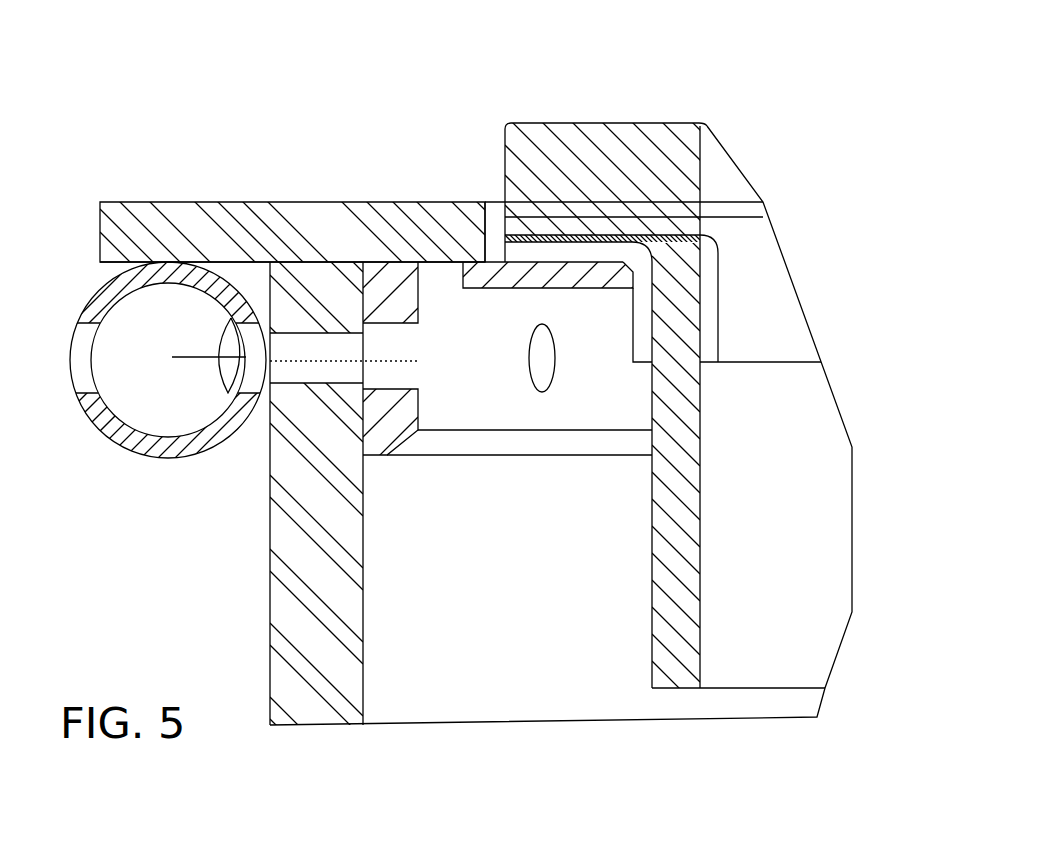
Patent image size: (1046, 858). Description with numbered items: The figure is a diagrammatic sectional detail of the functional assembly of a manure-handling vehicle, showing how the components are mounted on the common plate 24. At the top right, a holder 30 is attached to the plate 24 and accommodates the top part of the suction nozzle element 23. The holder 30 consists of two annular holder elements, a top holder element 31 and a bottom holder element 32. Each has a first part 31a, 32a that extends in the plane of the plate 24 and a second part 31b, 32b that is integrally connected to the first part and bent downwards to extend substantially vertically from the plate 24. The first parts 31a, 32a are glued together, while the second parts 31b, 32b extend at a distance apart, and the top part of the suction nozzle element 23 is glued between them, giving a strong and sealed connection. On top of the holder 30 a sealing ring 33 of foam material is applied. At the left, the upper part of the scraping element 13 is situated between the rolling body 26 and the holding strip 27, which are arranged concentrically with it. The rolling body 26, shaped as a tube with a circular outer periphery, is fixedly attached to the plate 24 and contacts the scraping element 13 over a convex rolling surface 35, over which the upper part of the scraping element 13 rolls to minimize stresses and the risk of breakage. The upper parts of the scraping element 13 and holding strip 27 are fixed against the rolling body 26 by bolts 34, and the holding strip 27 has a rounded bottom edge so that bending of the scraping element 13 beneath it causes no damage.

The scraping element 13 is at (297, 608).
The suction nozzle element 23 is at (669, 643).
The common plate 24 is at (424, 218).
The rolling body 26 is at (109, 420).
The holding strip 27 is at (390, 281).
The holder 30 is at (710, 258).
The top holder element 31 is at (515, 225).
The first part of top holder element 31a is at (593, 227).
The second part of top holder element 31b is at (708, 303).
The bottom holder element 32 is at (642, 347).
The first part of bottom holder element 32a is at (560, 253).
The second part of bottom holder element 32b is at (642, 296).
The ring of foam material 33 is at (668, 156).
The bolts 34 is at (225, 342).
The convex rolling surface 35 is at (260, 400).